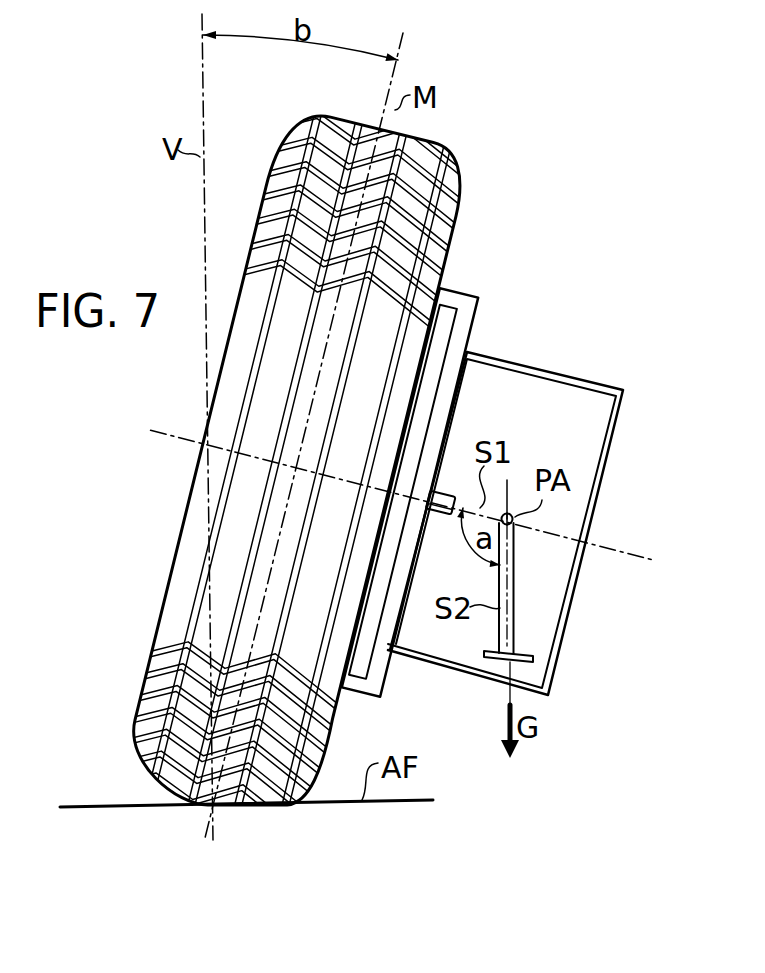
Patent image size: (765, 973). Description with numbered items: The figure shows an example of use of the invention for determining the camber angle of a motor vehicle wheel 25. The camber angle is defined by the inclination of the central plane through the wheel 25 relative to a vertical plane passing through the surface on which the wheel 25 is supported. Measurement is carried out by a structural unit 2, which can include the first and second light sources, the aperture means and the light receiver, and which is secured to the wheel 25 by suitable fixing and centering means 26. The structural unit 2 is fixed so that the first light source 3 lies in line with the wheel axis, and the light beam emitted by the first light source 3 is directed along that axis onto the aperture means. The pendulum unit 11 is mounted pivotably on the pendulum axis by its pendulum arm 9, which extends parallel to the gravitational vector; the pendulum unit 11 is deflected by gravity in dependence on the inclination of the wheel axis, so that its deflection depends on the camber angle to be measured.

The structural unit 2 is at (568, 380).
The first light beam source 3 is at (442, 496).
The pendulum arm 9 is at (515, 582).
The pendulum unit 11 is at (492, 661).
The motor vehicle wheel 25 is at (418, 222).
The fixing and centering means 26 is at (470, 313).